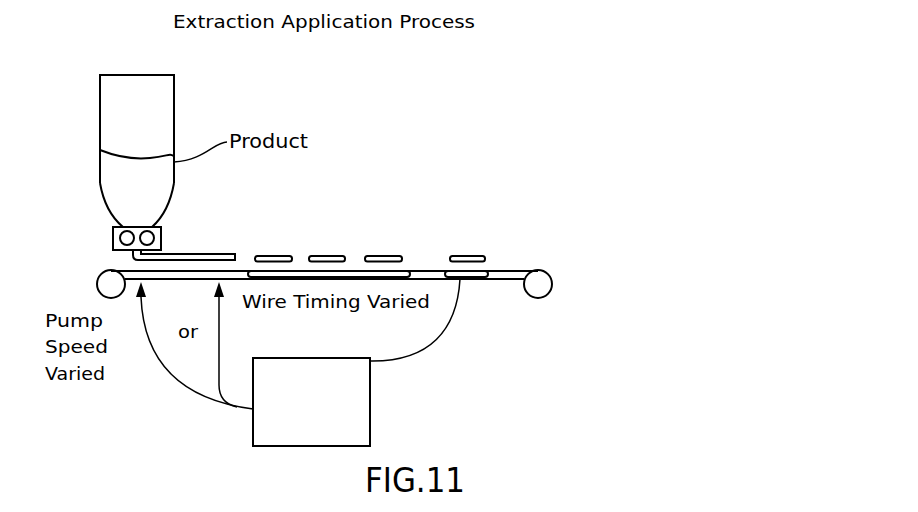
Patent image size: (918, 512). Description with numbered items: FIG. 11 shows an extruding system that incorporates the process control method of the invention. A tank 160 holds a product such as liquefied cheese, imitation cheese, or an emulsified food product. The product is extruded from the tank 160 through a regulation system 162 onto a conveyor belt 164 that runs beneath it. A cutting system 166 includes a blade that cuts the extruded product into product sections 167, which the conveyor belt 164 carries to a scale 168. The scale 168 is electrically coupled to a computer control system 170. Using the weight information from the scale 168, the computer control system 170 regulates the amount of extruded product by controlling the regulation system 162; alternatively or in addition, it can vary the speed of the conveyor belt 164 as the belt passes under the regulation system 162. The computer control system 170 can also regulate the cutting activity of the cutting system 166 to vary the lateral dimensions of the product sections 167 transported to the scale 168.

The tank 160 is at (174, 124).
The regulation system 162 is at (161, 233).
The conveyor belt 164 is at (517, 271).
The cutting system 166 is at (226, 255).
The product sections 167 is at (393, 258).
The scale 168 is at (467, 279).
The computer control system 170 is at (370, 421).